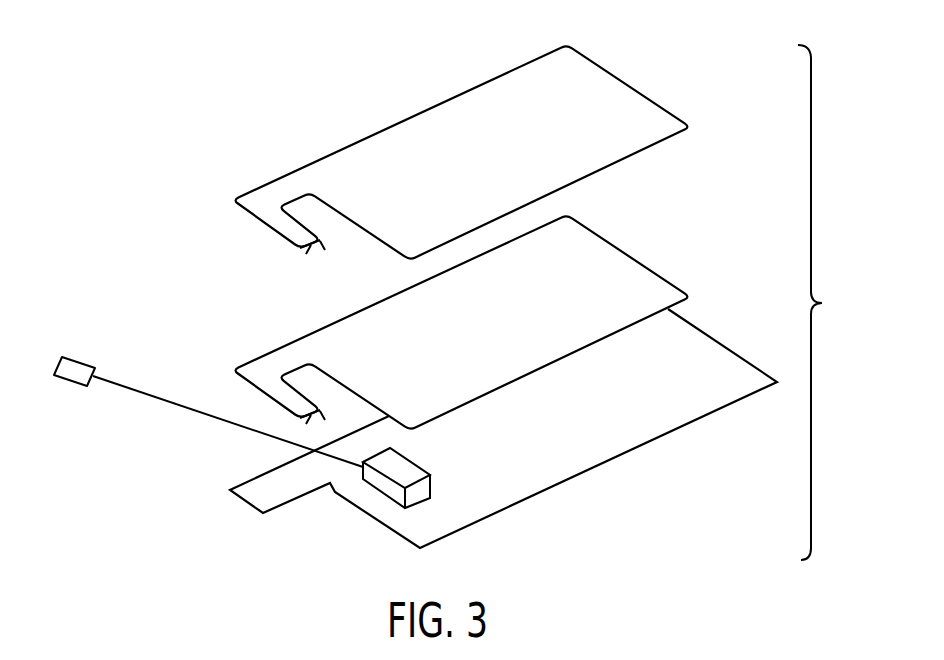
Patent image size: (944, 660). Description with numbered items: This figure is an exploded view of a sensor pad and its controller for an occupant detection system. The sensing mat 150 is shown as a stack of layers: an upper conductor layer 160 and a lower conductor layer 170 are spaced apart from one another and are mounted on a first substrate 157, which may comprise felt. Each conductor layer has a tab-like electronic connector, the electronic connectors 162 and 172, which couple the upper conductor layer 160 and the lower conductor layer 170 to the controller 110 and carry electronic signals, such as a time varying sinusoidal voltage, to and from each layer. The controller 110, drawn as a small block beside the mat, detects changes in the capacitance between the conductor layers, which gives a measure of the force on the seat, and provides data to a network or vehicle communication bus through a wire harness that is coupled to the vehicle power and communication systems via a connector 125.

The controller 110 is at (392, 485).
The connector 125 is at (68, 382).
The sensing mat 150 is at (825, 302).
The first substrate 157 is at (640, 433).
The upper conductor layer 160 is at (593, 87).
The electronic connector 162 is at (310, 252).
The lower conductor layer 170 is at (660, 300).
The electronic connector 172 is at (308, 421).